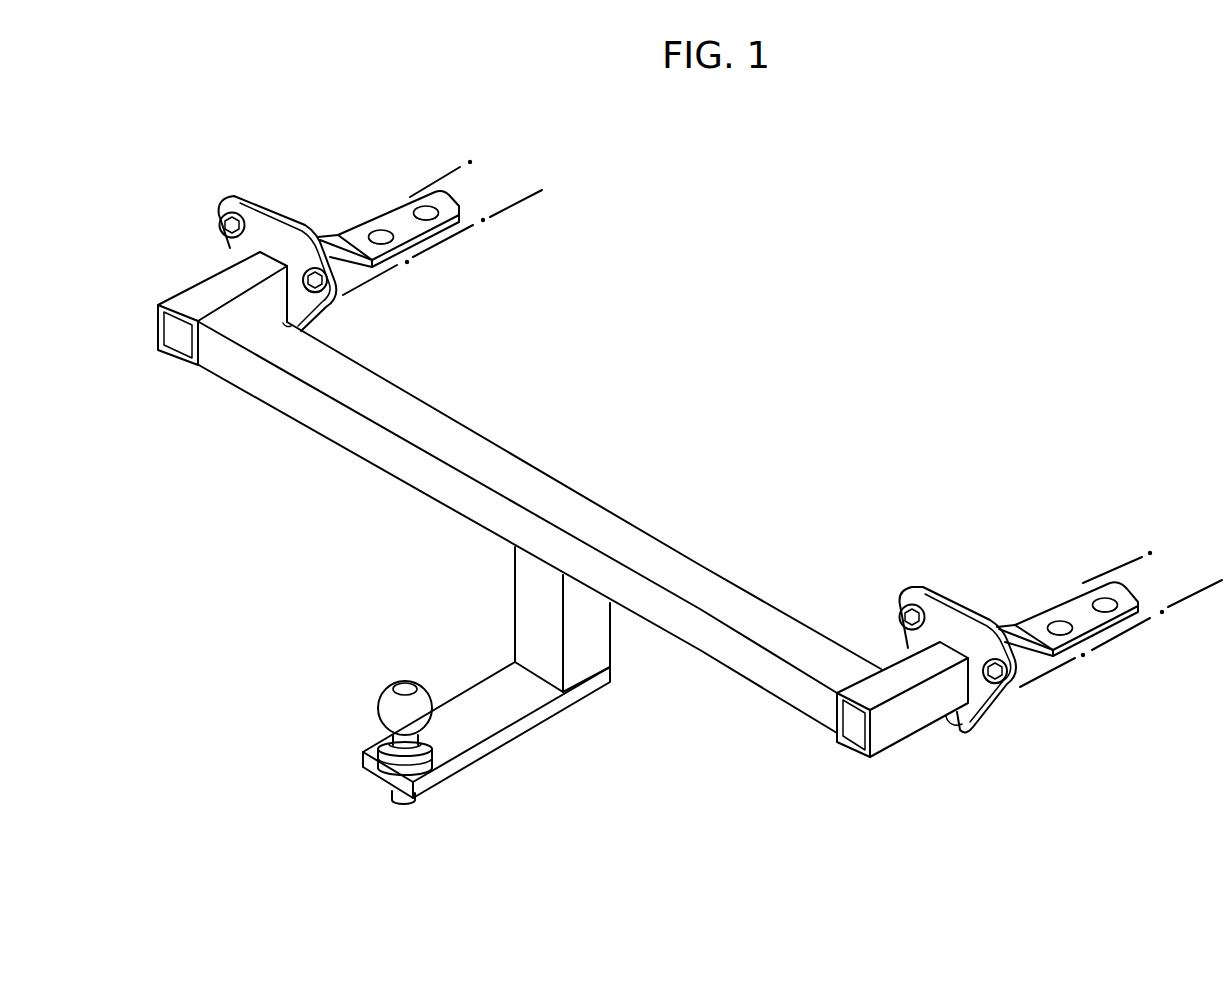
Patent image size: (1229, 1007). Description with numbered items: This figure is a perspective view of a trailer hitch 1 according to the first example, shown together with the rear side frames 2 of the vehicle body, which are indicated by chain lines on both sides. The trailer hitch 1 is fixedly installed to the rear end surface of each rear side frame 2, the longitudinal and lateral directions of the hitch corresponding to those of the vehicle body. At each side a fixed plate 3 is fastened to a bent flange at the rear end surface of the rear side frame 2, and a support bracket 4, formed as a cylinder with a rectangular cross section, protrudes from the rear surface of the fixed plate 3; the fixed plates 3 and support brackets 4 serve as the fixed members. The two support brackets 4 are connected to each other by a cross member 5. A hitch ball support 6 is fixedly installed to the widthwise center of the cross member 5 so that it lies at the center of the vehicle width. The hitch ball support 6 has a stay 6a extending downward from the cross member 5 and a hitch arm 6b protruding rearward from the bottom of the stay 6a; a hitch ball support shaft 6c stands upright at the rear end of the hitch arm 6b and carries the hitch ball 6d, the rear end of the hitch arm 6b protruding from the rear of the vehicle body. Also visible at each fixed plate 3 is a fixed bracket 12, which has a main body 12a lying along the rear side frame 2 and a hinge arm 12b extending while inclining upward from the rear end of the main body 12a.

The trailer hitch 1 is at (293, 508).
The rear side frame 2 is at (452, 162).
The fixed plate 3 is at (330, 308).
The support bracket 4 is at (190, 298).
The cross member 5 is at (718, 648).
The hitch ball support 6 is at (470, 689).
The stay 6a is at (515, 597).
The hitch arm 6b is at (492, 743).
The hitch ball support shaft 6c is at (388, 743).
The hitch ball 6d is at (390, 703).
The fixed bracket 12 is at (707, 367).
The main body 12a is at (397, 214).
The hinge arm 12b is at (325, 239).